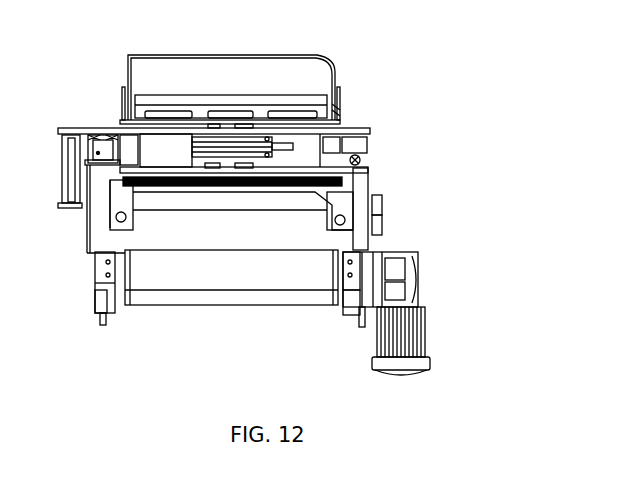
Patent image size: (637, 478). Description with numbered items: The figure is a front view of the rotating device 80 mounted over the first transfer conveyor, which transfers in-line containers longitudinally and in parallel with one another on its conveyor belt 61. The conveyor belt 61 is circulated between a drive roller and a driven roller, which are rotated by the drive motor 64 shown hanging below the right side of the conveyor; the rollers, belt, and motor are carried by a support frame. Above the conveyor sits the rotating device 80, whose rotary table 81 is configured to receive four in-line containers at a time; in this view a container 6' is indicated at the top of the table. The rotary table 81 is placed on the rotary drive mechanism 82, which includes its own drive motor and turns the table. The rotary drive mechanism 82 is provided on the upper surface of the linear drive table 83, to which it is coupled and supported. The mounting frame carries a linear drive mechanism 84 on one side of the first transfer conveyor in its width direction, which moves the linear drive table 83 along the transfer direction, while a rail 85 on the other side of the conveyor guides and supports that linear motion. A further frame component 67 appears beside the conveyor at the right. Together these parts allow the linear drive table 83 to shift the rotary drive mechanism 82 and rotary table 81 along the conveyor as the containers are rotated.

The hopper 6' is at (252, 69).
The rotating device 80 is at (420, 95).
The rotary table 81 is at (353, 108).
The rotary drive mechanism 82 is at (283, 157).
The linear drive table 83 is at (155, 157).
The linear drive mechanism 84 is at (110, 157).
The rail 85 is at (372, 137).
The conveyor belt 61 is at (298, 227).
The drive motor 64 is at (432, 328).
The side frame 67 is at (362, 210).